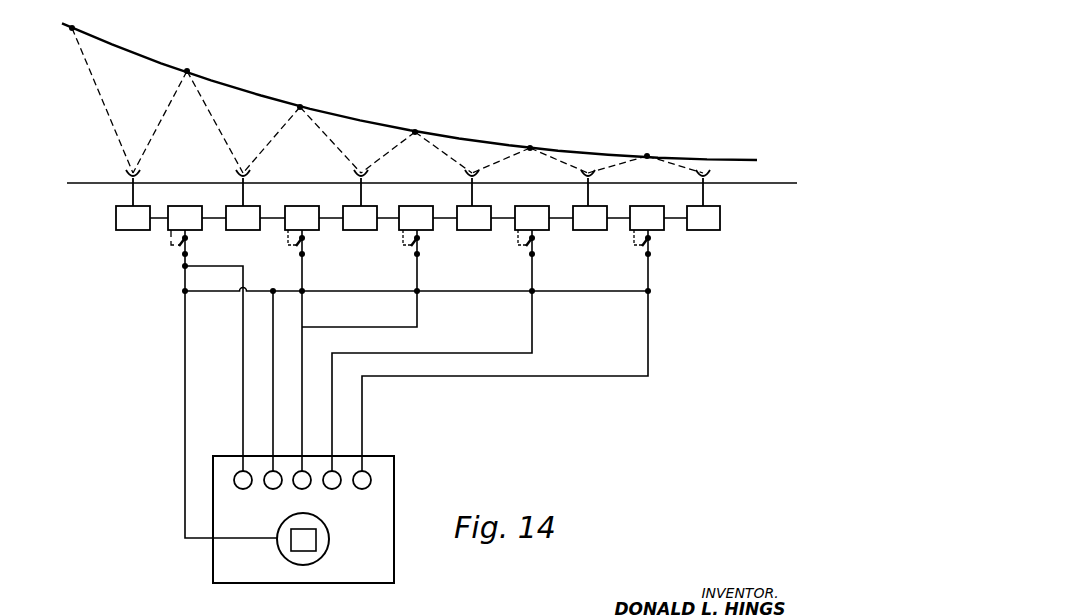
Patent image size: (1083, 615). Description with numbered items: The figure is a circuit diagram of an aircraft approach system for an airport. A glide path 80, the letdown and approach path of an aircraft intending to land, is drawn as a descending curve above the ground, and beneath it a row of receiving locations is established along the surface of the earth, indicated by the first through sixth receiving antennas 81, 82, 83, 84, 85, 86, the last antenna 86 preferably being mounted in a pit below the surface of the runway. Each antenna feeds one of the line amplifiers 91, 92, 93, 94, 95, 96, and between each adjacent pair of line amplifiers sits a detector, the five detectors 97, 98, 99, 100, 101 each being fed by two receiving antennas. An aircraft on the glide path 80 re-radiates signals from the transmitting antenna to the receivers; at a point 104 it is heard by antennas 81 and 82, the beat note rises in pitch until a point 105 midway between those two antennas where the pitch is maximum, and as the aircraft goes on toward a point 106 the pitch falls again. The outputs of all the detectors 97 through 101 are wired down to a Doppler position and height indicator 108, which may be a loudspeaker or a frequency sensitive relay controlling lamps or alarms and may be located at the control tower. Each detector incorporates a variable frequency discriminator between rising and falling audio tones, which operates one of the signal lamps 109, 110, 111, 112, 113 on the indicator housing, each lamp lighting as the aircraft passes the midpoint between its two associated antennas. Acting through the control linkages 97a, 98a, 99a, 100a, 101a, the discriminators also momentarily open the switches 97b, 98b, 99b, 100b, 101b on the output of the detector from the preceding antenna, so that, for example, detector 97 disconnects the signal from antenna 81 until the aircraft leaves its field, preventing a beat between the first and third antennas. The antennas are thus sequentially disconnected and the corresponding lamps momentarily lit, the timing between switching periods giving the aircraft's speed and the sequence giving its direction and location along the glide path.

The glide path 80 is at (128, 46).
The first receiving antenna 81 is at (126, 174).
The second receiving antenna 82 is at (236, 175).
The third receiving antenna 83 is at (354, 175).
The fourth receiving antenna 84 is at (465, 175).
The fifth receiving antenna 85 is at (581, 175).
The sixth receiving antenna 86 is at (710, 174).
The line amplifier 91 is at (116, 214).
The line amplifier 92 is at (251, 206).
The line amplifier 93 is at (366, 206).
The line amplifier 94 is at (478, 206).
The line amplifier 95 is at (597, 206).
The line amplifier 96 is at (723, 206).
The detector 97 is at (179, 206).
The detector 98 is at (308, 206).
The detector 99 is at (423, 206).
The detector 100 is at (535, 206).
The detector 101 is at (641, 206).
The control linkage 97a is at (171, 245).
The switch 97b is at (188, 245).
The control linkage 98a is at (288, 245).
The switch 98b is at (305, 245).
The control linkage 99a is at (403, 245).
The switch 99b is at (420, 245).
The control linkage 100a is at (518, 245).
The switch 100b is at (535, 245).
The control linkage 101a is at (634, 245).
The switch 101b is at (651, 245).
The point on the glide path 104 is at (78, 28).
The point on the glide path 105 is at (192, 66).
The point on the glide path 106 is at (301, 102).
The Doppler position and height indicator 108 is at (323, 555).
The signal lamp 109 is at (238, 473).
The signal lamp 110 is at (276, 489).
The signal lamp 111 is at (305, 471).
The signal lamp 112 is at (336, 489).
The signal lamp 113 is at (371, 480).